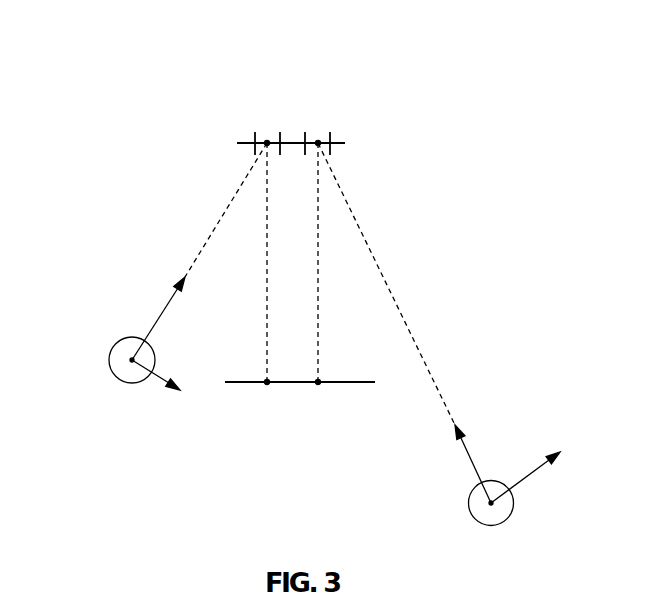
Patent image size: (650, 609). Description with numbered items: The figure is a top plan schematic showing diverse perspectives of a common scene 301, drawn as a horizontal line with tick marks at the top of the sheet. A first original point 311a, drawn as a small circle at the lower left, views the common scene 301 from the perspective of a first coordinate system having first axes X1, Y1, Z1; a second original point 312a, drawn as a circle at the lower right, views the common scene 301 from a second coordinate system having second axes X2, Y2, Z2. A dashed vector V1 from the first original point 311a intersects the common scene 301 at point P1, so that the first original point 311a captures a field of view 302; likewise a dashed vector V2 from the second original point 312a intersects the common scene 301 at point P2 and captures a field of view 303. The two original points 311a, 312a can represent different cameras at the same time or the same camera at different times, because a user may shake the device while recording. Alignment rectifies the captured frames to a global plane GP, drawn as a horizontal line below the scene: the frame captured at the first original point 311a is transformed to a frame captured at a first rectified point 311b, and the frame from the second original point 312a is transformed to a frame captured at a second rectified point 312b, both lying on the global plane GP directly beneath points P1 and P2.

The common scene 301 is at (362, 143).
The field of view 302 is at (282, 133).
The field of view 303 is at (303, 133).
The point P1 is at (266, 142).
The point P2 is at (320, 142).
The vector V1 is at (218, 223).
The vector V2 is at (390, 293).
The first original point 311a is at (120, 349).
The second original point 312a is at (520, 493).
The first rectified point 311b is at (267, 384).
The second rectified point 312b is at (317, 384).
The global plane GP is at (362, 384).
The first axis X1 is at (158, 390).
The first axis Y1 is at (169, 318).
The first axis Z1 is at (115, 400).
The second axis X2 is at (536, 477).
The second axis Y2 is at (475, 464).
The second axis Z2 is at (490, 545).